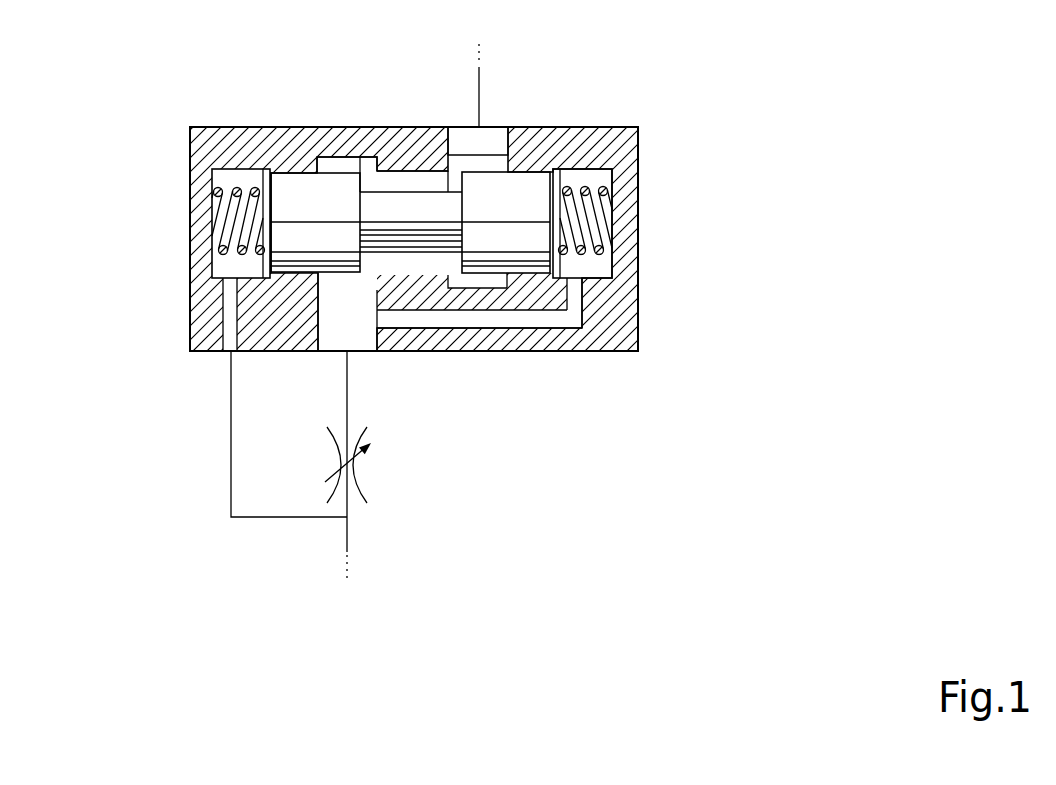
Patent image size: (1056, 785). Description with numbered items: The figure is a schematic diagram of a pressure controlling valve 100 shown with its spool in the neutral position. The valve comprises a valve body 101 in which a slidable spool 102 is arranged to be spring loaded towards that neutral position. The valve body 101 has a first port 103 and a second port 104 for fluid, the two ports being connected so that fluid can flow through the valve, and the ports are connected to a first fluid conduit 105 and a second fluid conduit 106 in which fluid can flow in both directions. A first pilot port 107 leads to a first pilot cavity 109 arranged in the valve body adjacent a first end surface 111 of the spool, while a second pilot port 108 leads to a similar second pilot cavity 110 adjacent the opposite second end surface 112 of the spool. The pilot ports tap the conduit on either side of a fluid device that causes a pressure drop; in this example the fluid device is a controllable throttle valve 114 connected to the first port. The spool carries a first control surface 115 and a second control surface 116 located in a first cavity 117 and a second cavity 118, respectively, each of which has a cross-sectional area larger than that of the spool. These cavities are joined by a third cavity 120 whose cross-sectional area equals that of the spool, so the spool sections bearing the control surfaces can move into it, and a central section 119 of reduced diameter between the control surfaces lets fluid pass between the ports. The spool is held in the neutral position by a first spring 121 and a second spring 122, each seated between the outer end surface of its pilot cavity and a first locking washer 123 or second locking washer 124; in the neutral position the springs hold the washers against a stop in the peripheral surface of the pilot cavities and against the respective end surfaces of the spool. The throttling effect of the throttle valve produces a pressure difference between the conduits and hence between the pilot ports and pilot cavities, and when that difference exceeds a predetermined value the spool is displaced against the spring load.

The pressure controlling valve 100 is at (705, 106).
The valve body 101 is at (412, 140).
The spool 102 is at (308, 193).
The first port 103 is at (350, 328).
The second port 104 is at (482, 142).
The first fluid conduit 105 is at (347, 537).
The second fluid conduit 106 is at (478, 75).
The first pilot port 107 is at (231, 330).
The second pilot port 108 is at (540, 322).
The first pilot cavity 109 is at (223, 267).
The second pilot cavity 110 is at (602, 267).
The first end surface 111 is at (237, 167).
The second end surface 112 is at (556, 182).
The controllable throttle valve 114 is at (353, 473).
The first control surface 115 is at (364, 180).
The second control surface 116 is at (455, 270).
The first cavity 117 is at (330, 160).
The second cavity 118 is at (497, 279).
The central section 119 is at (396, 214).
The third cavity 120 is at (433, 178).
The first spring 121 is at (233, 212).
The second spring 122 is at (595, 218).
The first locking washer 123 is at (213, 297).
The second locking washer 124 is at (574, 283).